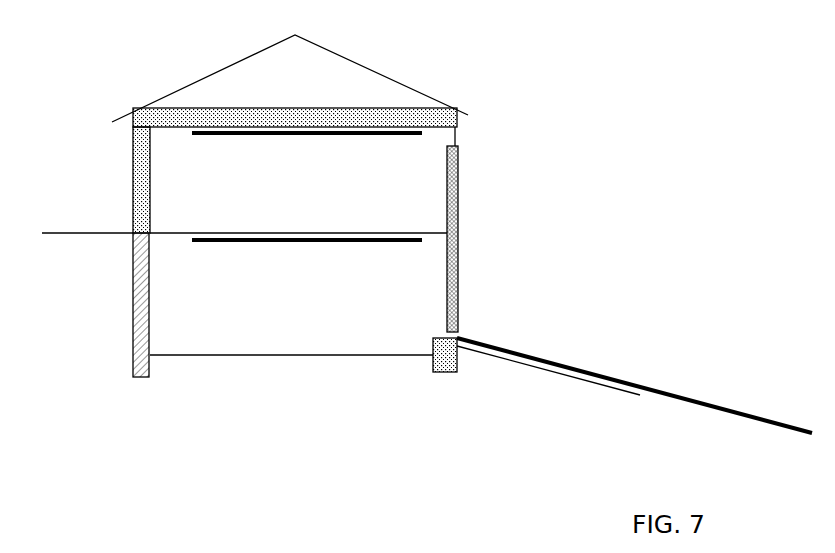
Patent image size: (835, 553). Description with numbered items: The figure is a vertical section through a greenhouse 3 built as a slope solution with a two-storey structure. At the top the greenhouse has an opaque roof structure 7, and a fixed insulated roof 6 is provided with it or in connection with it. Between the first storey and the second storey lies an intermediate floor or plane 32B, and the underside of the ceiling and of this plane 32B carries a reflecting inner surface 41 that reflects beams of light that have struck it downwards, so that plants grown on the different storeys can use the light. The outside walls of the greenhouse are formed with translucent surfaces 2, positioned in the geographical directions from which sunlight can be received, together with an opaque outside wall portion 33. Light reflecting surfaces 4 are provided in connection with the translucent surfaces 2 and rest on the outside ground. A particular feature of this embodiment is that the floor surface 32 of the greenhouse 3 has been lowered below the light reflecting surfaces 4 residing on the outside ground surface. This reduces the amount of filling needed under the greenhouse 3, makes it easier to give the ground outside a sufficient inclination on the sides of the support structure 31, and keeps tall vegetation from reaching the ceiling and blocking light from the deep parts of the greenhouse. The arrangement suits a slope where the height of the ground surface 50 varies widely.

The translucent surfaces 2 is at (467, 285).
The greenhouse 3 is at (136, 67).
The light reflecting surfaces 4 is at (517, 353).
The fixed insulated roof 6 is at (435, 120).
The opaque roof structure 7 is at (377, 68).
The support structure 31 is at (440, 372).
The floor surface 32 is at (318, 355).
The intermediate floor or plane 32B is at (423, 230).
The opaque outside wall portion 33 is at (145, 133).
The reflecting inner surface 41 is at (237, 137).
The ground surface 50 is at (112, 235).